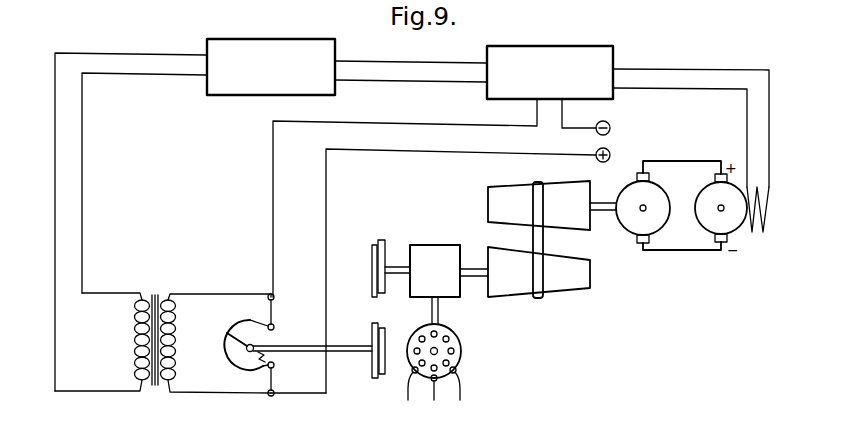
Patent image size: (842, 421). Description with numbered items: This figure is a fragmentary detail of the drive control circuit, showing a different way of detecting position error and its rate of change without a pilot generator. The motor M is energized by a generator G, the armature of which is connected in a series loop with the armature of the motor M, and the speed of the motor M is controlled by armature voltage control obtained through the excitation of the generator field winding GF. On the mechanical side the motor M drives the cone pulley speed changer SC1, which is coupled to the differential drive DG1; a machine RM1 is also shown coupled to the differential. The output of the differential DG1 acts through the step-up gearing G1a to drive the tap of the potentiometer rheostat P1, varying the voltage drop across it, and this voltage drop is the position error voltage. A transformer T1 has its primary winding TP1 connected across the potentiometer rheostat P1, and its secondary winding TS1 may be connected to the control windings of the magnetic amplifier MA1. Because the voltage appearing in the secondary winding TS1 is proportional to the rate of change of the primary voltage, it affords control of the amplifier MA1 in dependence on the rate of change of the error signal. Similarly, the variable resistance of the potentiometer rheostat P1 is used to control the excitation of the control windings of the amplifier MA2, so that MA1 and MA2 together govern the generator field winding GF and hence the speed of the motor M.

The magnetic amplifier MA1 is at (277, 80).
The amplifier MA2 is at (567, 86).
The transformer T1 is at (165, 286).
The secondary winding TS1 is at (135, 327).
The primary winding TP1 is at (176, 322).
The potentiometer rheostat P1 is at (240, 367).
The step-up gearing G1a is at (371, 311).
The differential drive DG1 is at (450, 280).
The reversible motor RM1 is at (503, 358).
The speed changer (cone pulleys) SC1 is at (595, 315).
The motor M is at (668, 176).
The generator G is at (709, 176).
The field winding GF is at (760, 236).